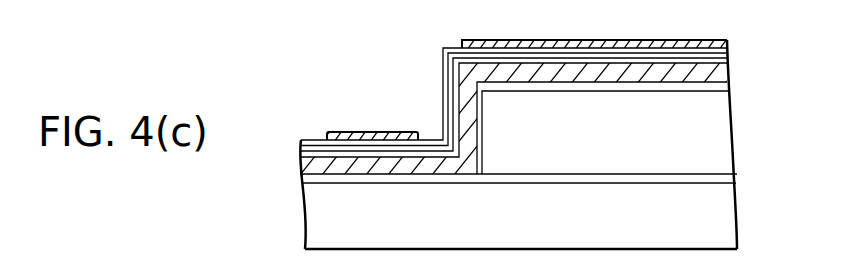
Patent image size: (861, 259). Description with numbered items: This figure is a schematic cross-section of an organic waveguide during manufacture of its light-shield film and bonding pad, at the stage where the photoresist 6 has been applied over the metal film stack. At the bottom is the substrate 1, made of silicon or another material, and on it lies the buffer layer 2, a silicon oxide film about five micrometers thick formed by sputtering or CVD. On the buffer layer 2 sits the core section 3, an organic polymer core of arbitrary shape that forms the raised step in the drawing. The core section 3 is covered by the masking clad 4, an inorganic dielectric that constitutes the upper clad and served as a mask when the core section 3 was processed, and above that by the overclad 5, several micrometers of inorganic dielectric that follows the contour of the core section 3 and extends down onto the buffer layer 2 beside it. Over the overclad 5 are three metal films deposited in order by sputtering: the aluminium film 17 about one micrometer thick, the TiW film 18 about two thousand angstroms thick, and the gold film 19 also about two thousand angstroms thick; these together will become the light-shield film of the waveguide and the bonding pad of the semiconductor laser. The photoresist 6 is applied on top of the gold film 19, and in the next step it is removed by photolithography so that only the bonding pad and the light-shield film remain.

The substrate 1 is at (718, 228).
The buffer layer 2 is at (737, 180).
The core section 3 is at (718, 145).
The masking clad 4 is at (713, 100).
The overclad 5 is at (728, 77).
The photoresist 6 is at (497, 40).
The aluminium film 17 is at (642, 58).
The TiW film 18 is at (595, 55).
The gold film 19 is at (555, 45).